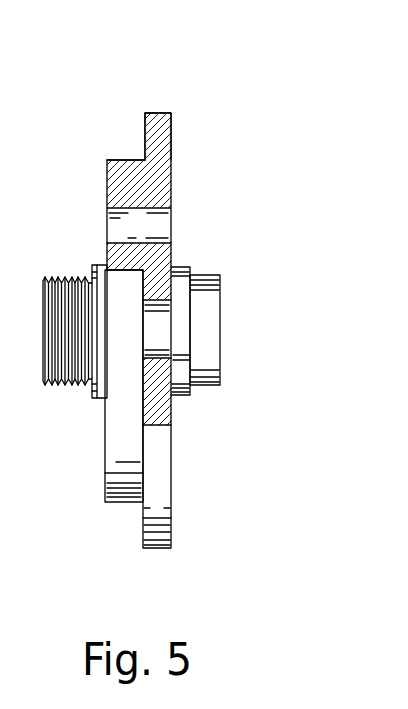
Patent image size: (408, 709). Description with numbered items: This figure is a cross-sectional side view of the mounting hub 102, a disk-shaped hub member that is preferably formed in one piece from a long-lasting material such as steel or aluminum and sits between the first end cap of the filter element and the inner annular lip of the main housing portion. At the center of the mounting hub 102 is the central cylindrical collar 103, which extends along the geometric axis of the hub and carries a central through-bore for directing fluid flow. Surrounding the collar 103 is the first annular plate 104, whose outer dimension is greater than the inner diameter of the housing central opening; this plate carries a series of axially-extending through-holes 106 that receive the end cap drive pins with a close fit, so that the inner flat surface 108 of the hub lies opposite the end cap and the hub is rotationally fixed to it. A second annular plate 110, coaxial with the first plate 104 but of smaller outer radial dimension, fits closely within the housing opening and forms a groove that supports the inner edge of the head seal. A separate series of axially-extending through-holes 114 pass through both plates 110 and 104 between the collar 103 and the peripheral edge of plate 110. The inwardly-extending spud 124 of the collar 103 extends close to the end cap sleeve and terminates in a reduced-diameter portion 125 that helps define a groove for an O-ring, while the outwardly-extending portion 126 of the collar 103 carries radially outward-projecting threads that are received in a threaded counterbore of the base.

The mounting hub 102 is at (165, 113).
The central cylindrical collar 103 is at (73, 277).
The first annular plate 104 is at (153, 530).
The through-holes 106 is at (163, 340).
The inner flat surface 108 is at (172, 160).
The second annular plate 110 is at (122, 480).
The through-holes 114 is at (163, 227).
The inwardly-extending spud 124 is at (203, 385).
The reduced-diameter portion 125 is at (208, 300).
The outwardly-extending portion 126 is at (60, 383).